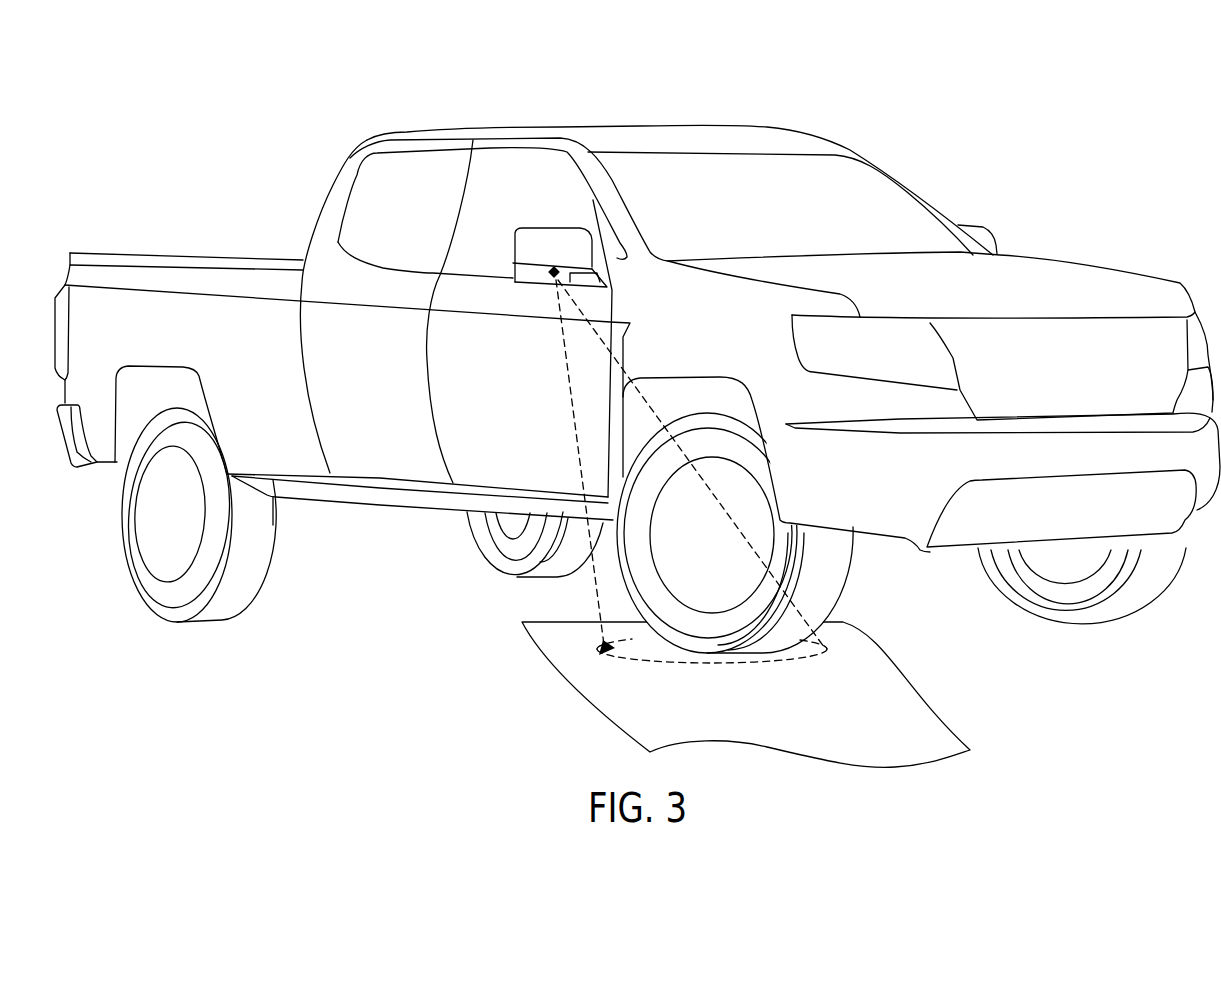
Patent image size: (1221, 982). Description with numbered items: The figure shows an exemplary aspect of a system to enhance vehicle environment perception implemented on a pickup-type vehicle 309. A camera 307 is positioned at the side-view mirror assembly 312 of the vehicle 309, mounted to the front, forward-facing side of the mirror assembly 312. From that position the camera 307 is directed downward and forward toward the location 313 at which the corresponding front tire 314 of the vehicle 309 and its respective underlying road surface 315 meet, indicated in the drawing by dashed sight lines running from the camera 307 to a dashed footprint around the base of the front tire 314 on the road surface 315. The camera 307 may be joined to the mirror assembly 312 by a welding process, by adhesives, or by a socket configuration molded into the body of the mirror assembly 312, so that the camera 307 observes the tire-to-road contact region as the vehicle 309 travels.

The camera 307 is at (548, 273).
The vehicle 309 is at (1090, 278).
The side-view mirror assembly 312 is at (572, 198).
The location 313 is at (600, 653).
The front tire 314 is at (833, 571).
The road surface 315 is at (883, 682).